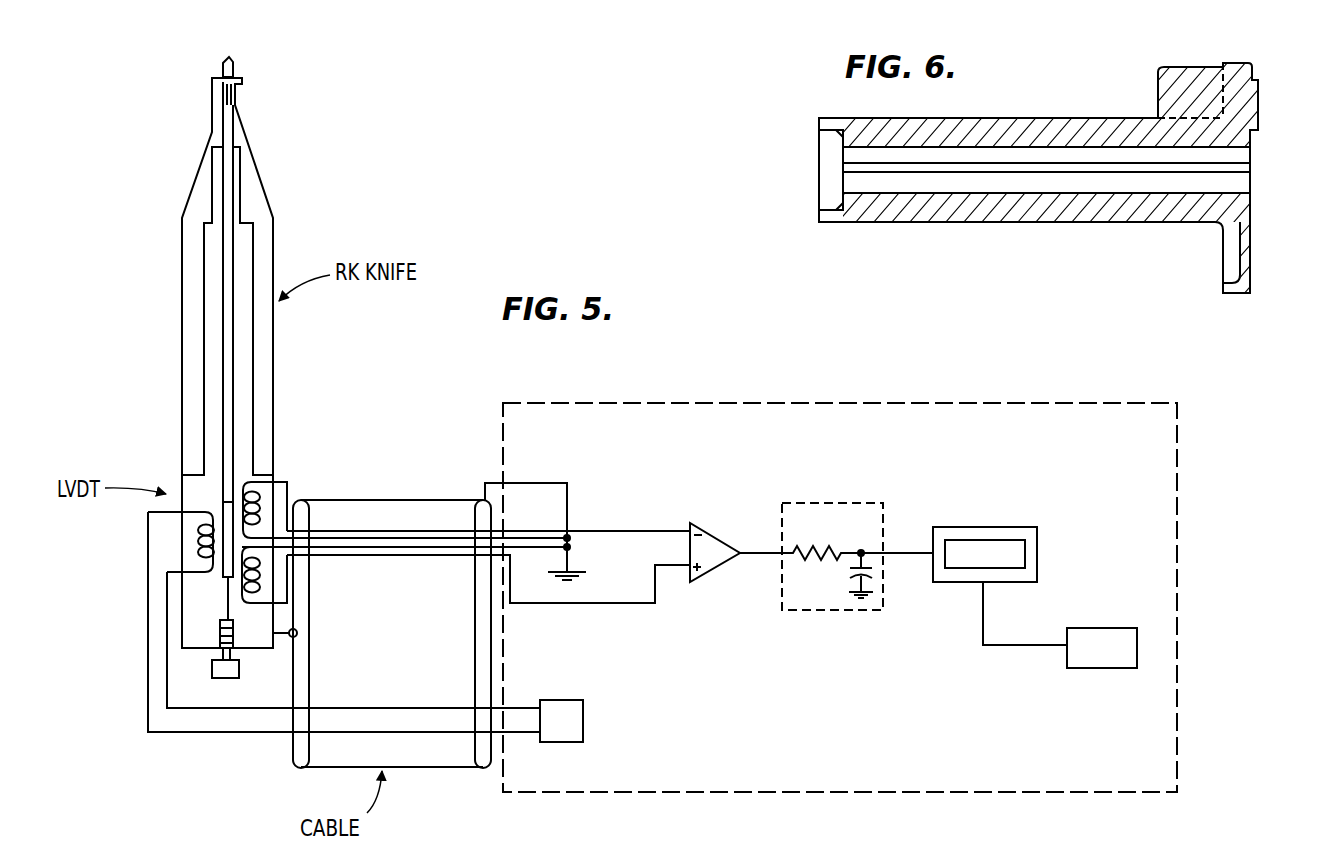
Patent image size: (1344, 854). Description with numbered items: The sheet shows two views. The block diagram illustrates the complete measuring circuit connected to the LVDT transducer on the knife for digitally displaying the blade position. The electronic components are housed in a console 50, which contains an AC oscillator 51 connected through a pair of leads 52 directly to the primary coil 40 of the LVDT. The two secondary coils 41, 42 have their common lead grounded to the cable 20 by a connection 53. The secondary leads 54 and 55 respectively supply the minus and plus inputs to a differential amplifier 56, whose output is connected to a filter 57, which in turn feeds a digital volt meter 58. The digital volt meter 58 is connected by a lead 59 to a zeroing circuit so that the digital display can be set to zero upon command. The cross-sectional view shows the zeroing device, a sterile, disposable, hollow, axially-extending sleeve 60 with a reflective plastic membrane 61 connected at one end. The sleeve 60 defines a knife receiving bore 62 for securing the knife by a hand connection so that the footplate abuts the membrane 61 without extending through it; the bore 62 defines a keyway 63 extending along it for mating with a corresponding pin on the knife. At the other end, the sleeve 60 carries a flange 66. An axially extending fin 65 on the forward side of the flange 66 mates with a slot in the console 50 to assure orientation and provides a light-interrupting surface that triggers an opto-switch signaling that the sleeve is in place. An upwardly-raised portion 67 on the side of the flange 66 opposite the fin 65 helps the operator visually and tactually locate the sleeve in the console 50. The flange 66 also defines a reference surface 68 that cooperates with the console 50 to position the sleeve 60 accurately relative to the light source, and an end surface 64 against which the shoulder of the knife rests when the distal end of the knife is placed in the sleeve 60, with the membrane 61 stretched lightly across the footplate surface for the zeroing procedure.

In FIG. 5, the cable 20 is at (357, 500).
In FIG. 5, the primary coil 40 is at (198, 542).
In FIG. 5, the secondary coil 41 is at (258, 500).
In FIG. 5, the secondary coil 42 is at (262, 578).
In FIG. 5, the console 50 is at (1177, 728).
In FIG. 5, the AC oscillator 51 is at (573, 700).
In FIG. 5, the leads 52 is at (238, 736).
In FIG. 5, the connection 53 is at (547, 483).
In FIG. 5, the secondary lead 54 is at (541, 521).
In FIG. 5, the secondary lead 55 is at (523, 557).
In FIG. 5, the differential amplifier 56 is at (722, 561).
In FIG. 5, the filter 57 is at (834, 498).
In FIG. 5, the digital volt meter 58 is at (1038, 567).
In FIG. 5, the lead 59 is at (1008, 647).
In FIG. 6, the sleeve 60 is at (1061, 231).
In FIG. 6, the reflective plastic membrane 61 is at (819, 170).
In FIG. 6, the knife receiving bore 62 is at (947, 183).
In FIG. 6, the keyway 63 is at (1240, 172).
In FIG. 6, the end surface 64 is at (1252, 217).
In FIG. 6, the fin 65 is at (1192, 78).
In FIG. 6, the flange 66 is at (1257, 259).
In FIG. 6, the upwardly-raised portion 67 is at (1259, 113).
In FIG. 6, the reference surface 68 is at (1224, 285).